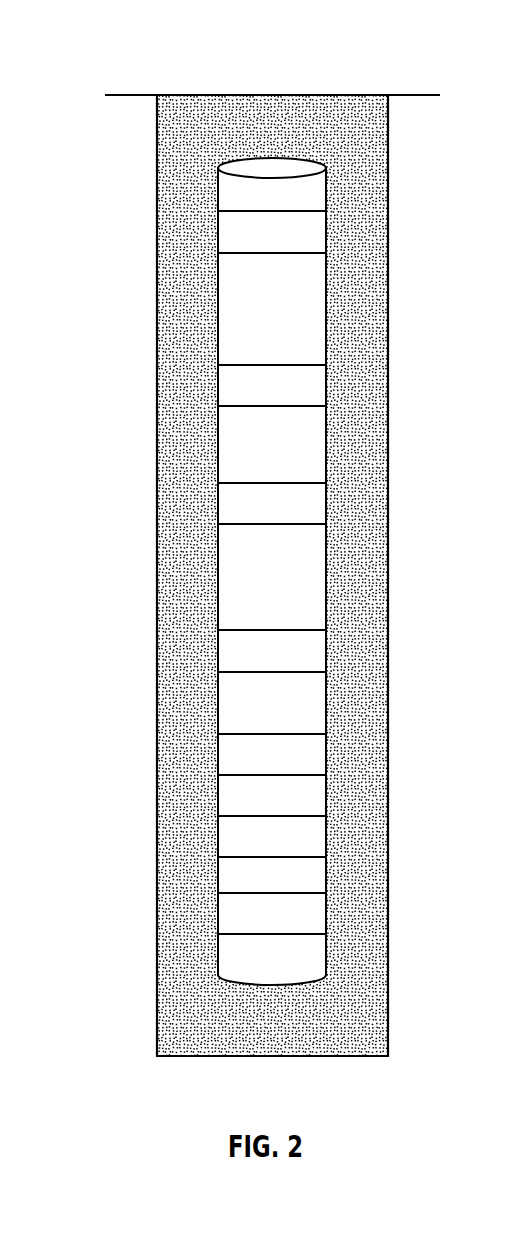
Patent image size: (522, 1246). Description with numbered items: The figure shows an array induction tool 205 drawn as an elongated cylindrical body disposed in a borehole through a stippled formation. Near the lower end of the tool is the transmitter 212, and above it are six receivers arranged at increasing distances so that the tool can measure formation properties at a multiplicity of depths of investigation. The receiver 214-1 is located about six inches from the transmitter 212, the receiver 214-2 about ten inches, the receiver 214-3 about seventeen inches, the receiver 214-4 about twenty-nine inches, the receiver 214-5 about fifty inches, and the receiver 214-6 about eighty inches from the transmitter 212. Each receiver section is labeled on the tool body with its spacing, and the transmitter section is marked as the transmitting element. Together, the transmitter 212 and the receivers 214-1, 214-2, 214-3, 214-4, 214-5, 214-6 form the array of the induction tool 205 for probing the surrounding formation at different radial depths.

The induction tool 205 is at (112, 46).
The receiver 214-6 is at (229, 233).
The receiver 214-5 is at (229, 386).
The receiver 214-4 is at (229, 501).
The receiver 214-3 is at (229, 643).
The receiver 214-2 is at (229, 750).
The receiver 214-1 is at (229, 835).
The transmitter 212 is at (228, 916).